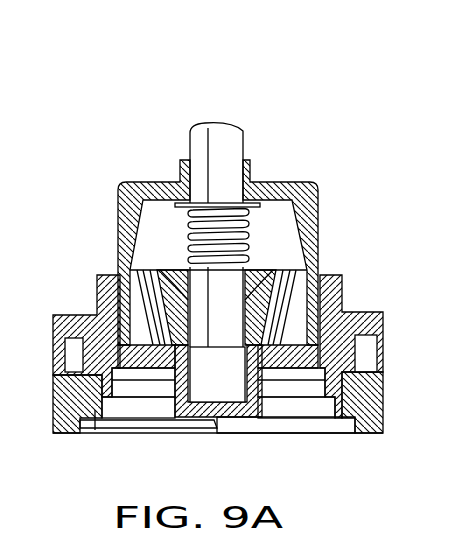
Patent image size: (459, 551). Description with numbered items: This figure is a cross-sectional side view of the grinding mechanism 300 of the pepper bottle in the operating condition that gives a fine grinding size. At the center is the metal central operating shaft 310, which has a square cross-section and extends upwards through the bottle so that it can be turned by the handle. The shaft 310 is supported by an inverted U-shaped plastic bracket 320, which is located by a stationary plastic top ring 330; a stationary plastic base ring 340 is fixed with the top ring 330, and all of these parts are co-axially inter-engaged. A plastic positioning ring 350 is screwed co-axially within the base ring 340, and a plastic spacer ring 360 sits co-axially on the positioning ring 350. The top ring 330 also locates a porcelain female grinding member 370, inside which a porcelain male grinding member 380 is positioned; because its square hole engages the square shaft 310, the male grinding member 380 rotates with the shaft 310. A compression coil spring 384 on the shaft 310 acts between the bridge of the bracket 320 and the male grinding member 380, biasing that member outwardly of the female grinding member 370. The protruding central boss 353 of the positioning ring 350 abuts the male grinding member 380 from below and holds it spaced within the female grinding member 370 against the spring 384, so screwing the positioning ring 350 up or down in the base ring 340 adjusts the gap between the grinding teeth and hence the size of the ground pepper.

The grinding mechanism 300 is at (112, 89).
The central operating shaft 310 is at (227, 137).
The bracket 320 is at (277, 186).
The top ring 330 is at (458, 271).
The base ring 340 is at (458, 393).
The positioning ring 350 is at (313, 417).
The central boss 353 is at (230, 415).
The spacer ring 360 is at (140, 398).
The female grinding member 370 is at (122, 310).
The male grinding member 380 is at (140, 318).
The compression coil spring 384 is at (193, 240).